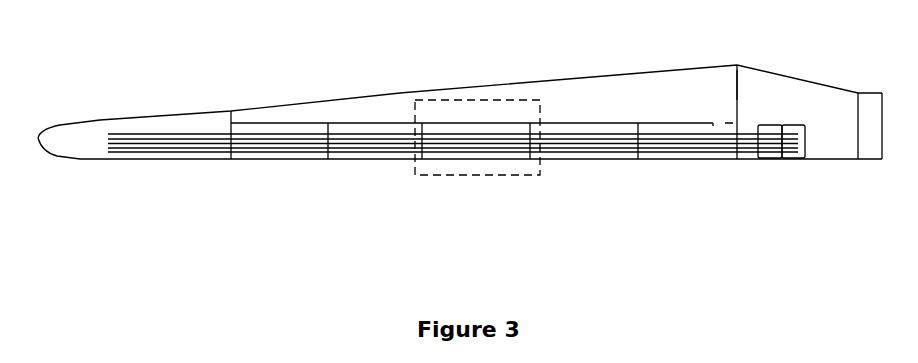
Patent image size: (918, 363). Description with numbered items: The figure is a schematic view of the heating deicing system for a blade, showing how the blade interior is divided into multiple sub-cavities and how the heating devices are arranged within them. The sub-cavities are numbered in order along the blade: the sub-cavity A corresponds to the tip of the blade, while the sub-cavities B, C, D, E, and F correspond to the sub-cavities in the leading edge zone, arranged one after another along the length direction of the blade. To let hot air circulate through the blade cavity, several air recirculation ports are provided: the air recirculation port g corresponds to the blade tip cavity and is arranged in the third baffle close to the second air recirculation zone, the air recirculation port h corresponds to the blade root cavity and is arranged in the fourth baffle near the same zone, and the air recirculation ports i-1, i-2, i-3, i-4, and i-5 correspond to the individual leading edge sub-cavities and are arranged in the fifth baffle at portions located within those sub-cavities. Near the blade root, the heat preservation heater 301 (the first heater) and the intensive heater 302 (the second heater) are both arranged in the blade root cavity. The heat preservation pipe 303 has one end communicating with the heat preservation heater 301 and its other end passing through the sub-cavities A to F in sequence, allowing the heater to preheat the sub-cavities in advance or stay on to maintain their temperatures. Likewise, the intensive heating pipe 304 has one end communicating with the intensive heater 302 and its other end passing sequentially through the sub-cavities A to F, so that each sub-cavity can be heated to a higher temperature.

The heat preservation heater 301 is at (767, 143).
The intensive heater 302 is at (805, 145).
The heat preservation pipe 303 is at (160, 140).
The intensive heating pipe 304 is at (210, 143).
The sub-cavity A is at (157, 145).
The sub-cavity B is at (283, 155).
The sub-cavity C is at (380, 155).
The sub-cavity D is at (470, 155).
The sub-cavity E is at (582, 157).
The sub-cavity F is at (685, 157).
The air recirculation port g is at (238, 133).
The air recirculation port h is at (727, 85).
The air recirculation port i-1 is at (317, 132).
The air recirculation port i-2 is at (405, 132).
The air recirculation port i-3 is at (517, 130).
The air recirculation port i-4 is at (626, 130).
The air recirculation port i-5 is at (717, 112).